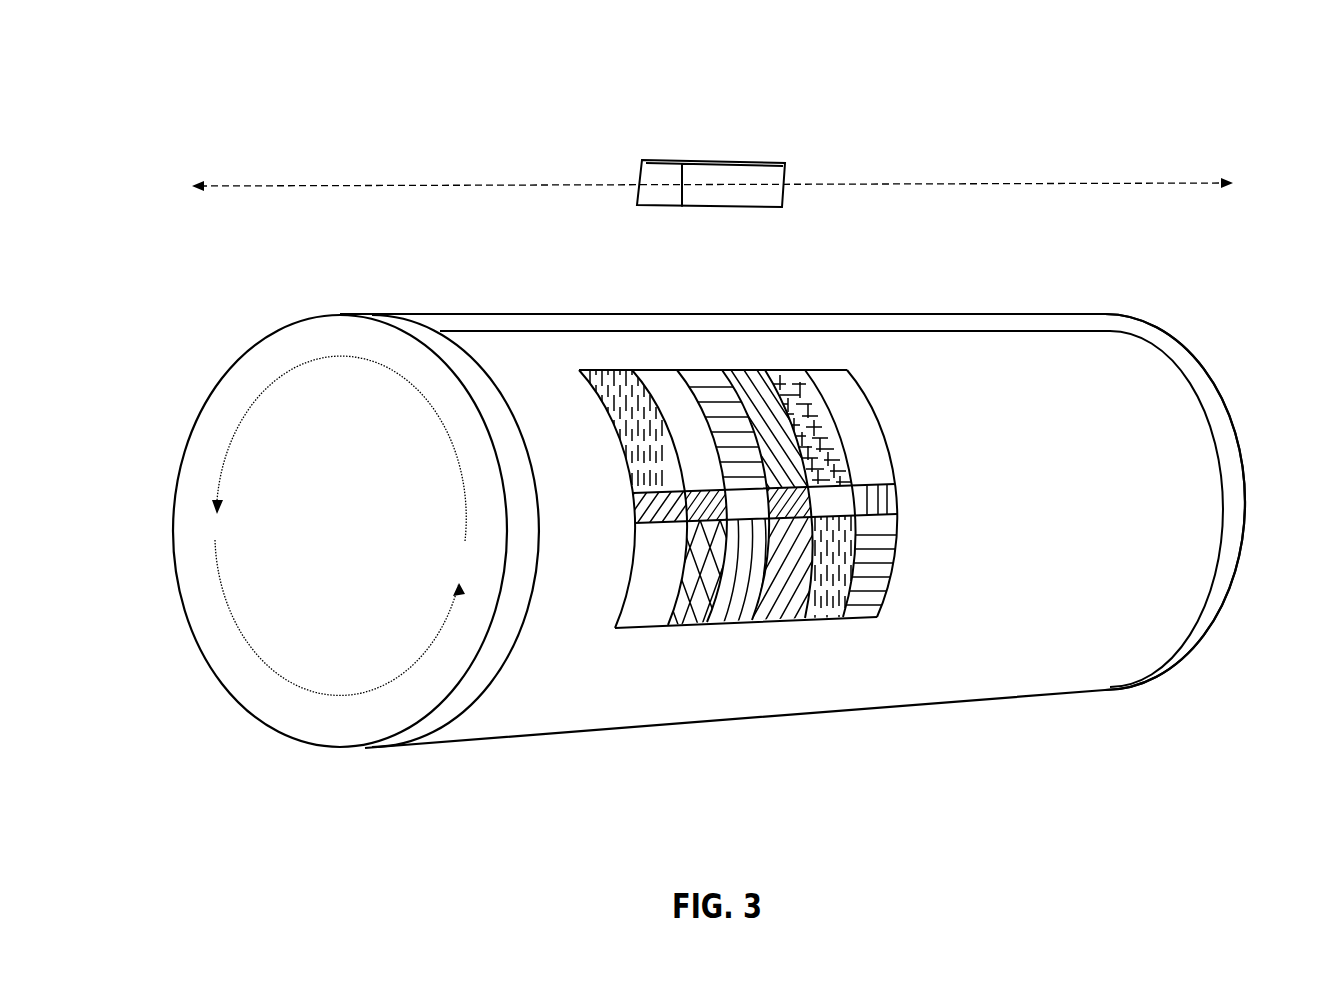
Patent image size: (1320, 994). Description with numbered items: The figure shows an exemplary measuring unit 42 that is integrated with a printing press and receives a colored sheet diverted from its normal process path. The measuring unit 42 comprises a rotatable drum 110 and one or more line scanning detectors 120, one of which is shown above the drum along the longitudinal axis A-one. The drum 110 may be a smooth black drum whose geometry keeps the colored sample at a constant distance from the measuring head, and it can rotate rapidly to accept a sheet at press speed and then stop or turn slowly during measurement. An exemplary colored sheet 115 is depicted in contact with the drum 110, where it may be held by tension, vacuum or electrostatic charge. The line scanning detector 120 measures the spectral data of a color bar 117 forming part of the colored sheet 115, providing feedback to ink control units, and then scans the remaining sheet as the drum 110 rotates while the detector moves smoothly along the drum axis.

The measuring unit 42 is at (193, 68).
The rotatable drum 110 is at (658, 753).
The colored sheet 115 is at (1052, 656).
The color bar 117 is at (778, 601).
The line scanning detector 120 is at (723, 130).